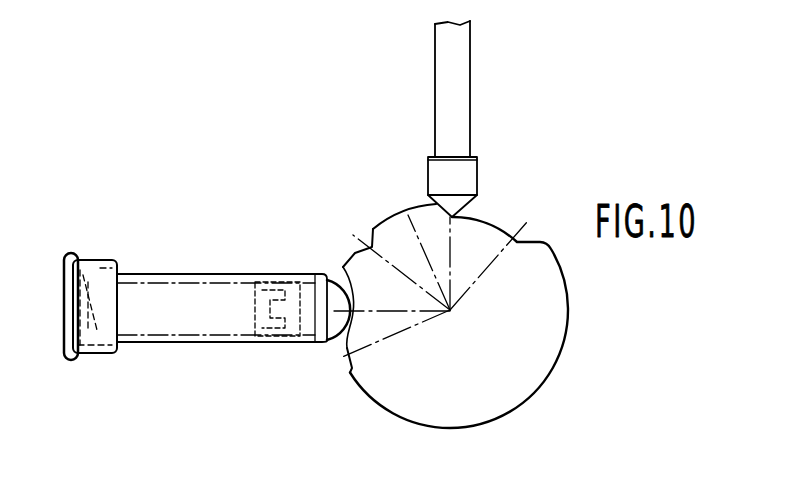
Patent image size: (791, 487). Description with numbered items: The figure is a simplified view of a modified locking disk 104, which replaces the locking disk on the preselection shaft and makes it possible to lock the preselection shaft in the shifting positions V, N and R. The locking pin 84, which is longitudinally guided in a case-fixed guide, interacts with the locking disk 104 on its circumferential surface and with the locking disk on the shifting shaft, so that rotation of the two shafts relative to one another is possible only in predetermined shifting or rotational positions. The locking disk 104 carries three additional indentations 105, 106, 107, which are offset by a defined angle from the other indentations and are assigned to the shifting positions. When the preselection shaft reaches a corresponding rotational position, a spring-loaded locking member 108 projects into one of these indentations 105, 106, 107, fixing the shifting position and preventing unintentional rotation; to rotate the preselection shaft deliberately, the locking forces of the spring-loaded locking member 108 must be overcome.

The locking pin 84 is at (471, 113).
The locking disk 104 is at (467, 293).
The additional indentation 105 is at (372, 247).
The additional indentation 106 is at (343, 267).
The additional indentation 107 is at (347, 348).
The spring-loaded locking member 108 is at (200, 352).